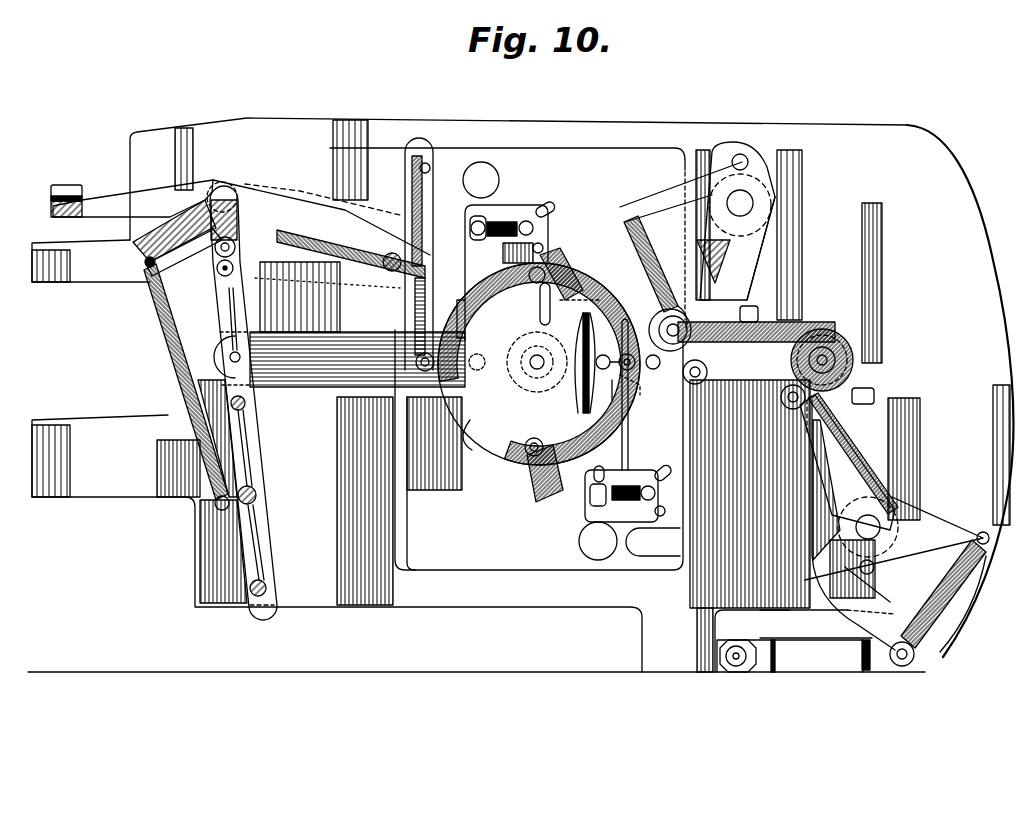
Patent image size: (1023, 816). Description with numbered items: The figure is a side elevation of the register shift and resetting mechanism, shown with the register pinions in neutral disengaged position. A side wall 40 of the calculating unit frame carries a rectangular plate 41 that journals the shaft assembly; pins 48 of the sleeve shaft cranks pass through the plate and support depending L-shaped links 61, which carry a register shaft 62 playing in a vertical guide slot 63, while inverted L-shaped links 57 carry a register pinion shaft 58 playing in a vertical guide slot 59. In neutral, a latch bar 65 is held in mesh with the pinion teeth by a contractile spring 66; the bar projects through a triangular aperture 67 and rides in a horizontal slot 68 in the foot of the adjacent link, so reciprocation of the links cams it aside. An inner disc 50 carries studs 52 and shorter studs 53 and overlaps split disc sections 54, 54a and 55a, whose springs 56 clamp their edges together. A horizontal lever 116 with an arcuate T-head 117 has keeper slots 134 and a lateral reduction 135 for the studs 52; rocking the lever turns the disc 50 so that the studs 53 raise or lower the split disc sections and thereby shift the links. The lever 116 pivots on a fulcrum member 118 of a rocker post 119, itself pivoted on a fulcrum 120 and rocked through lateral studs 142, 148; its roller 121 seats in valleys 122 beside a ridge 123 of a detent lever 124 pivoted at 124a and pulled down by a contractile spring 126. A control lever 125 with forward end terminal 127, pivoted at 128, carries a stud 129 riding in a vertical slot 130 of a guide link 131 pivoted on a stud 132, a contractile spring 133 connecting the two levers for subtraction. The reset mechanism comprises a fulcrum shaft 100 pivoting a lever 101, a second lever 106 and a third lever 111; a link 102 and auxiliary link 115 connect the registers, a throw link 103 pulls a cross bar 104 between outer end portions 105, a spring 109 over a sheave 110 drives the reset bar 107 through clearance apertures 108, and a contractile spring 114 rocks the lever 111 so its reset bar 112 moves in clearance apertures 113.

The side wall 40 is at (957, 198).
The plate 41 is at (539, 450).
The pin 48 is at (594, 416).
The inner disc 50 is at (628, 455).
The stud 52 is at (545, 265).
The stud 53 is at (613, 393).
The split disc section 54 is at (539, 364).
The split disc section 54a is at (630, 380).
The split disc section 55a is at (470, 446).
The contractile spring 56 is at (604, 355).
The inverted L-shaped link 57 is at (465, 243).
The register pinion shaft 58 is at (487, 226).
The vertical guide slot 59 is at (481, 180).
The depending L-shaped link 61 is at (604, 480).
The register shaft 62 is at (593, 497).
The vertical guide slot 63 is at (597, 506).
The bar 65 is at (528, 221).
The contractile spring 66 is at (563, 383).
The triangular aperture 67 is at (546, 206).
The horizontal slot 68 is at (542, 243).
The fulcrum shaft 100 is at (754, 203).
The lever 101 is at (742, 270).
The link 102 is at (760, 383).
The throw link 103 is at (800, 662).
The cross bar 104 is at (906, 668).
The outer end portion 105 is at (850, 622).
The second lever 106 is at (728, 243).
The reset bar 107 is at (664, 330).
The clearance aperture 108 is at (758, 313).
The coiled contractile spring 109 is at (822, 320).
The sheave 110 is at (846, 345).
The third lever 111 is at (672, 185).
The reset bar 112 is at (746, 160).
The clearance aperture 113 is at (898, 576).
The contractile spring 114 is at (626, 216).
The auxiliary link 115 is at (680, 305).
The lever 116 is at (312, 388).
The T-head 117 is at (599, 296).
The fulcrum member 118 is at (230, 357).
The rocker post 119 is at (262, 463).
The fulcrum 120 is at (258, 500).
The roller 121 is at (241, 236).
The valley 122 is at (255, 176).
The ridge 123 is at (327, 272).
The detent lever 124 is at (323, 190).
The pivot 124a is at (385, 270).
The control lever 125 is at (145, 197).
The contractile spring 126 is at (163, 326).
The forward end terminal 127 is at (60, 185).
The pivot 128 is at (240, 185).
The lateral stud 129 is at (460, 298).
The vertical slot 130 is at (430, 165).
The guide link 131 is at (405, 200).
The stud 132 is at (418, 360).
The contractile spring 133 is at (413, 300).
The keeper slot 134 is at (568, 280).
The lateral reduction 135 is at (539, 300).
The lateral stud 142 is at (245, 405).
The lateral stud 148 is at (266, 586).